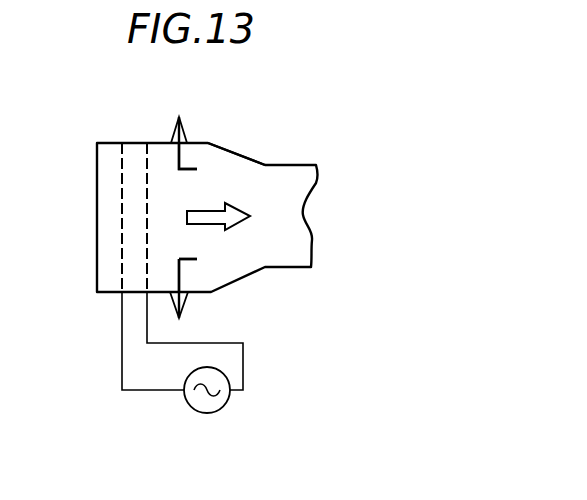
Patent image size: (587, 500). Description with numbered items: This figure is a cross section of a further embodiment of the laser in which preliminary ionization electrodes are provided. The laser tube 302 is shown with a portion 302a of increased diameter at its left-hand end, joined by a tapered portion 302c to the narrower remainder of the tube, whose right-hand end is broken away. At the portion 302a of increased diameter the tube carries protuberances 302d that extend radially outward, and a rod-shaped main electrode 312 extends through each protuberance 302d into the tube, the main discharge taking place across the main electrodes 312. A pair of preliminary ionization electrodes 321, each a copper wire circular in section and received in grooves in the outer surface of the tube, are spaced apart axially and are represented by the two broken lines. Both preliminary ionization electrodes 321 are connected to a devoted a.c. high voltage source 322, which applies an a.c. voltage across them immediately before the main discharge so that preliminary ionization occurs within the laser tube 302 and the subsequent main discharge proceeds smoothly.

The laser tube 302 is at (320, 175).
The portion of increased diameter 302a is at (153, 143).
The tapered portion 302c is at (250, 157).
The protuberance 302d is at (190, 140).
The main electrode 312 is at (180, 120).
The preliminary ionization electrode 321 is at (122, 143).
The a.c. high voltage source 322 is at (228, 405).